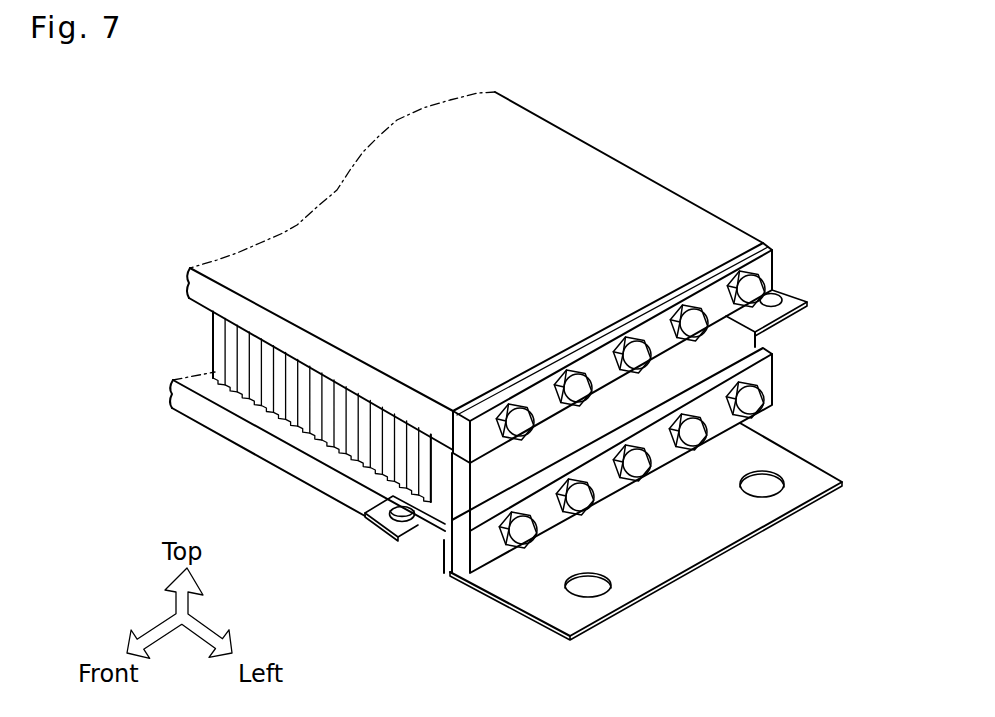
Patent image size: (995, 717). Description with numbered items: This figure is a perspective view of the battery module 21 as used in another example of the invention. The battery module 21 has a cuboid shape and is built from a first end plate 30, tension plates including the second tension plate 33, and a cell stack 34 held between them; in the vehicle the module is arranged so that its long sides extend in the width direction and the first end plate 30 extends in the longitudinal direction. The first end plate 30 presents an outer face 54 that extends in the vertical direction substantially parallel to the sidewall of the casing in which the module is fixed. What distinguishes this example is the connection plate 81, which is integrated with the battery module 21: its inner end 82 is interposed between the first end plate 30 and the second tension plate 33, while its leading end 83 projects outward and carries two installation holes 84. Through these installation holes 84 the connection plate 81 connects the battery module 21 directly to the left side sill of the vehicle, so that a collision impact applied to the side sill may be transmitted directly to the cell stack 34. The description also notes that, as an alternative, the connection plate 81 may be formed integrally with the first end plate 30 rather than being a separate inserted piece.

The battery module 21 is at (602, 158).
The cell stack 34 is at (203, 340).
The second tension plate 33 is at (314, 494).
The first end plate 30 is at (486, 567).
The outer face 54 is at (773, 266).
The inner end 82 is at (446, 558).
The connection plate 81 is at (741, 561).
The leading end 83 is at (648, 589).
The installation holes 84 is at (783, 484).